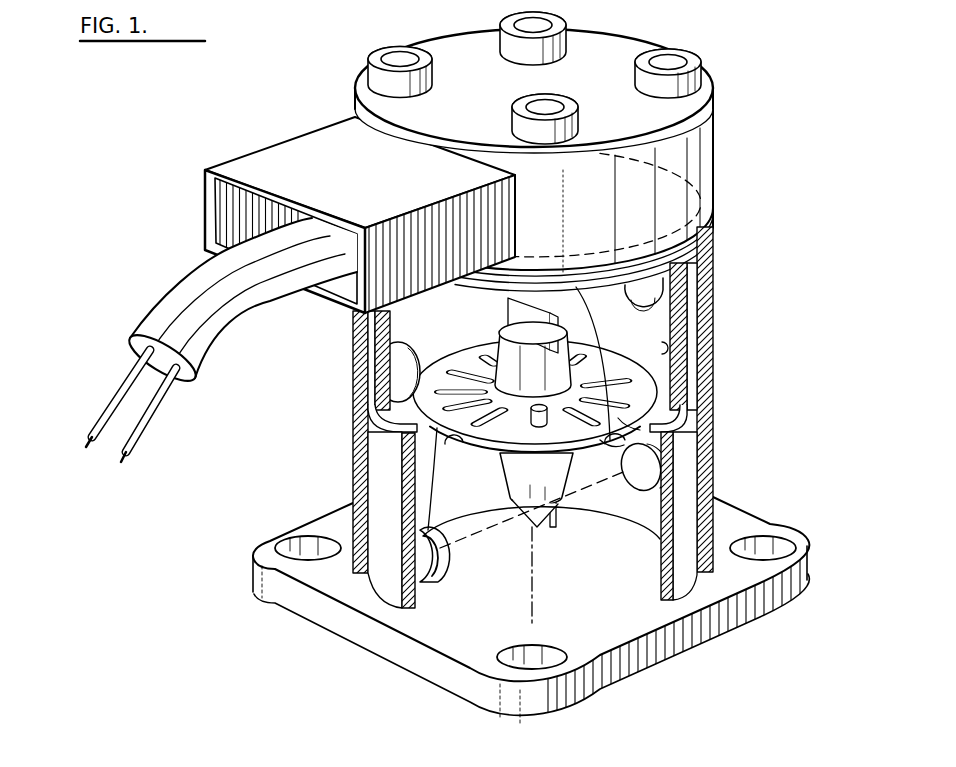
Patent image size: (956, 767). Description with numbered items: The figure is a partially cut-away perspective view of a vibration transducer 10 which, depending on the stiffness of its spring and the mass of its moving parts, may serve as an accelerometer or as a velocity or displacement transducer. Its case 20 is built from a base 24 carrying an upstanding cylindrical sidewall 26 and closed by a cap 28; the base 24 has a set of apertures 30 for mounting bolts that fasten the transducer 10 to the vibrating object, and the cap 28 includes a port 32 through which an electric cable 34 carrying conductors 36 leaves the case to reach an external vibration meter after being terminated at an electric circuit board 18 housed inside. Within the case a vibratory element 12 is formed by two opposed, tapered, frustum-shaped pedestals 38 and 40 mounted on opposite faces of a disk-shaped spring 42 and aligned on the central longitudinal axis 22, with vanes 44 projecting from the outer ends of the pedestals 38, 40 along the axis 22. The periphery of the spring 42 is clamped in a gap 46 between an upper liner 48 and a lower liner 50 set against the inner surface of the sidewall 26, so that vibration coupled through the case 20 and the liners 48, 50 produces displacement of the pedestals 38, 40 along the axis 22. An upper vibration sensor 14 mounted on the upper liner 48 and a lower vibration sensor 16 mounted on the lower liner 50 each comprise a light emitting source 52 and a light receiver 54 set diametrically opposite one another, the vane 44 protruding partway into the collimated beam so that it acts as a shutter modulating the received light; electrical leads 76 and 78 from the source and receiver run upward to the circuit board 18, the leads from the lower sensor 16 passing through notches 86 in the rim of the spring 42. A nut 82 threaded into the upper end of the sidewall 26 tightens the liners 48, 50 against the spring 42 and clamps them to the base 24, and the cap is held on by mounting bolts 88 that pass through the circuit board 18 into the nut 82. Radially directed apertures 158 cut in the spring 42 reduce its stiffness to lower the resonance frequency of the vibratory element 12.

The vibration transducer 10 is at (338, 72).
The vibratory element 12 is at (488, 328).
The upper vibration sensor 14 is at (662, 312).
The lower vibration sensor 16 is at (640, 507).
The electric circuit board 18 is at (713, 170).
The case 20 is at (634, 200).
The central longitudinal axis 22 is at (540, 612).
The base 24 is at (712, 643).
The cylindrical sidewall 26 is at (714, 387).
The cap 28 is at (713, 132).
The apertures 30 is at (766, 537).
The port 32 is at (253, 155).
The electric cable 34 is at (221, 340).
The conductors 36 is at (148, 424).
The pedestal 38 is at (535, 428).
The pedestal 40 is at (546, 481).
The spring 42 is at (396, 424).
The vanes 44 is at (505, 312).
The gap 46 is at (668, 427).
The upper liner 48 is at (668, 347).
The lower liner 50 is at (412, 592).
The light emitting source 52 is at (404, 376).
The light receiver 54 is at (655, 293).
The electrical leads 76 is at (432, 493).
The electrical leads 78 is at (618, 452).
The nut 82 is at (578, 290).
The notches 86 is at (628, 423).
The mounting bolts 88 is at (565, 23).
The radially directed apertures 158 is at (622, 372).